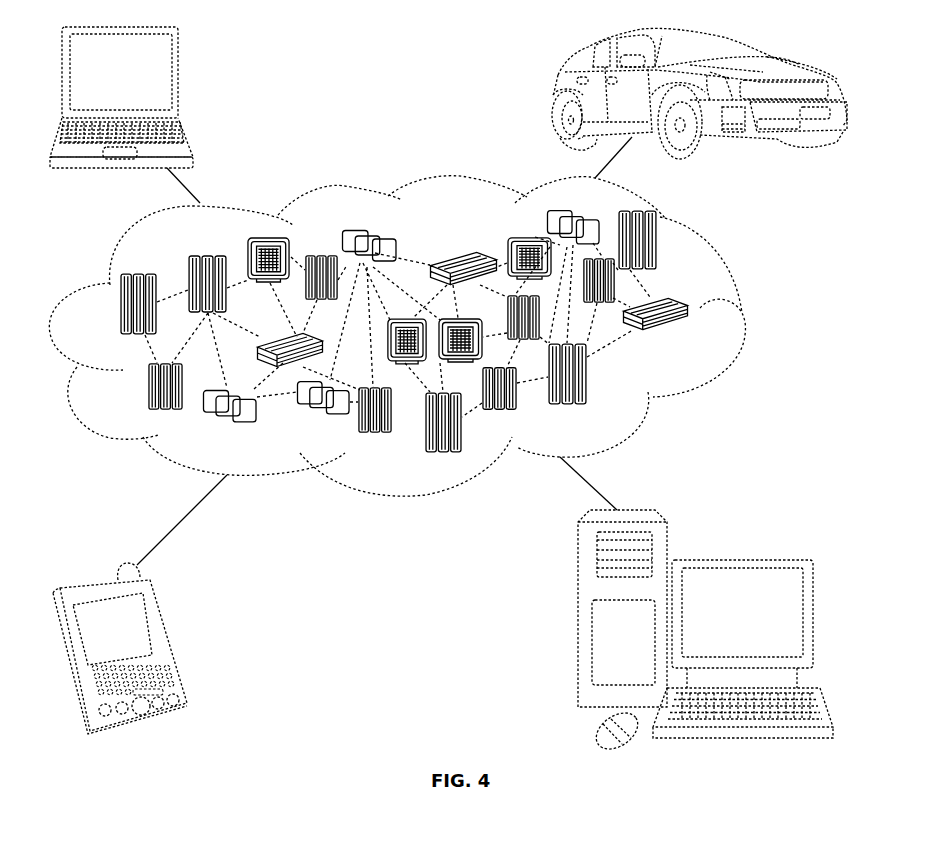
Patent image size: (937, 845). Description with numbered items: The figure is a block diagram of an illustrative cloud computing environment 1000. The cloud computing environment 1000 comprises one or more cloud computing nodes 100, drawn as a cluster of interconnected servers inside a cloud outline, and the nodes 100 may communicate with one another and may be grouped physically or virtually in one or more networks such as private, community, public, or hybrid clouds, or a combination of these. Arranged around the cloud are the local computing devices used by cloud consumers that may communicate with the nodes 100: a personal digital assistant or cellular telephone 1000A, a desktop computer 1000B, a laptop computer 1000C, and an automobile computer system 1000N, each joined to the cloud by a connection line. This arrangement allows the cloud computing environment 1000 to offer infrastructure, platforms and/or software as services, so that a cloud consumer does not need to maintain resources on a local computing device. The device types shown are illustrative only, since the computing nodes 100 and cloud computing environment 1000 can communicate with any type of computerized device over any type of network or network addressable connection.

The cloud computing nodes 100 is at (694, 340).
The cloud computing environment 1000 is at (742, 313).
The personal digital assistant (PDA) or cellular telephone 1000A is at (168, 637).
The desktop computer 1000B is at (752, 538).
The laptop computer 1000C is at (180, 78).
The automobile computer system 1000N is at (553, 95).